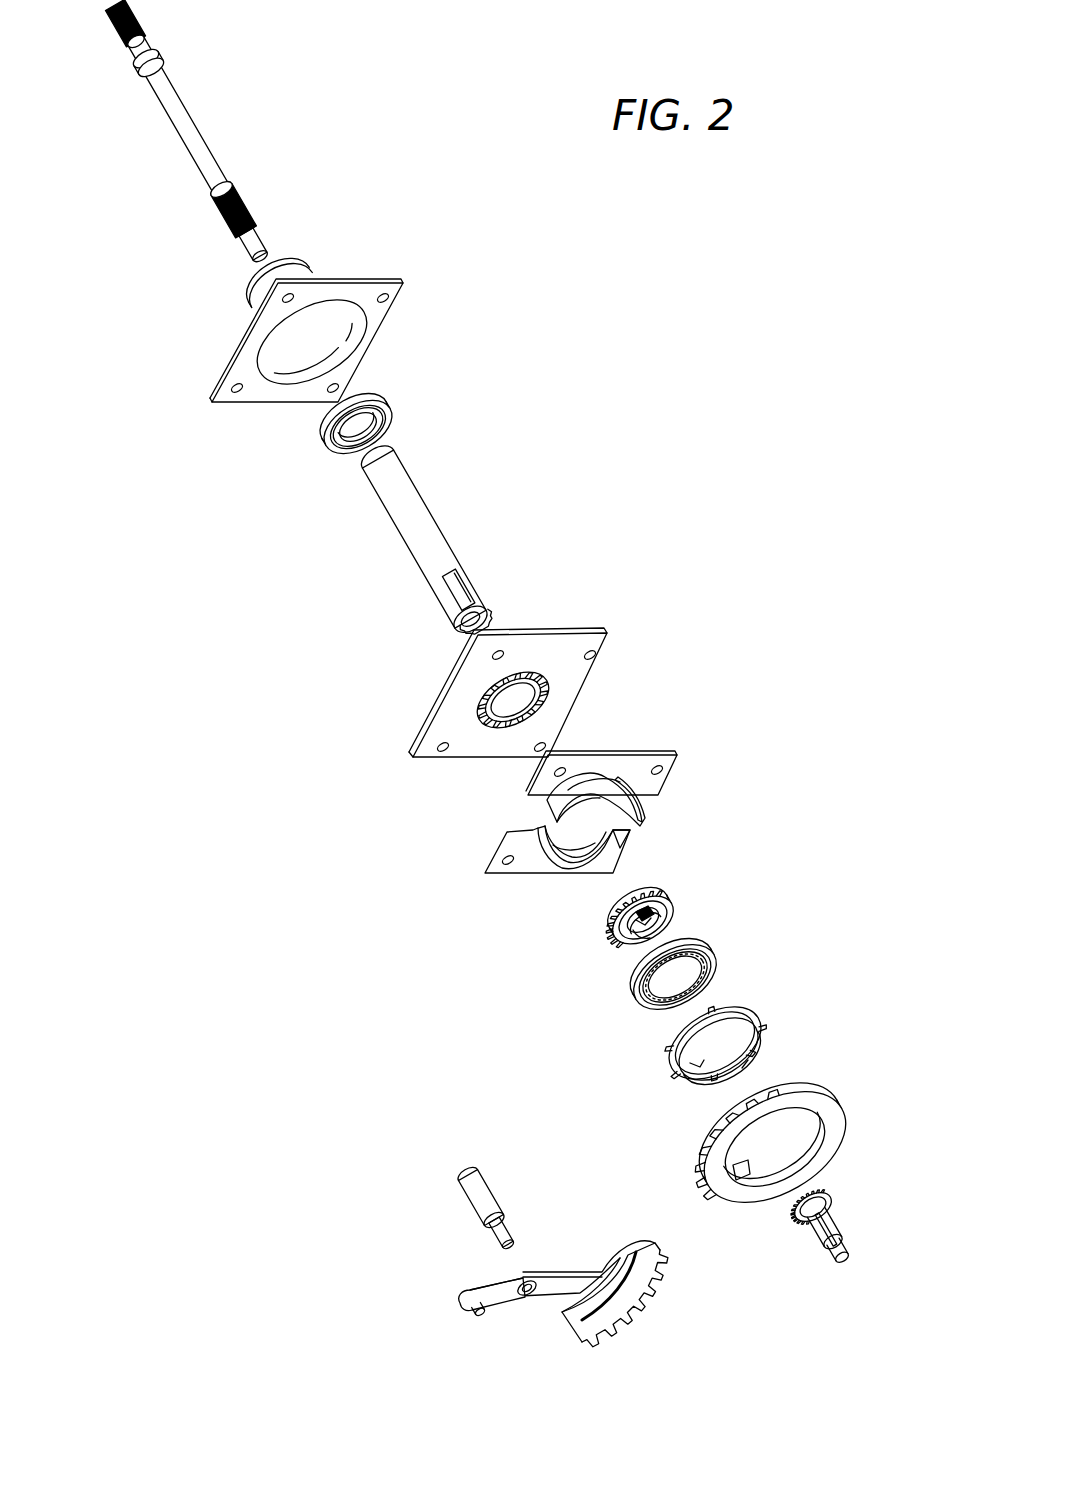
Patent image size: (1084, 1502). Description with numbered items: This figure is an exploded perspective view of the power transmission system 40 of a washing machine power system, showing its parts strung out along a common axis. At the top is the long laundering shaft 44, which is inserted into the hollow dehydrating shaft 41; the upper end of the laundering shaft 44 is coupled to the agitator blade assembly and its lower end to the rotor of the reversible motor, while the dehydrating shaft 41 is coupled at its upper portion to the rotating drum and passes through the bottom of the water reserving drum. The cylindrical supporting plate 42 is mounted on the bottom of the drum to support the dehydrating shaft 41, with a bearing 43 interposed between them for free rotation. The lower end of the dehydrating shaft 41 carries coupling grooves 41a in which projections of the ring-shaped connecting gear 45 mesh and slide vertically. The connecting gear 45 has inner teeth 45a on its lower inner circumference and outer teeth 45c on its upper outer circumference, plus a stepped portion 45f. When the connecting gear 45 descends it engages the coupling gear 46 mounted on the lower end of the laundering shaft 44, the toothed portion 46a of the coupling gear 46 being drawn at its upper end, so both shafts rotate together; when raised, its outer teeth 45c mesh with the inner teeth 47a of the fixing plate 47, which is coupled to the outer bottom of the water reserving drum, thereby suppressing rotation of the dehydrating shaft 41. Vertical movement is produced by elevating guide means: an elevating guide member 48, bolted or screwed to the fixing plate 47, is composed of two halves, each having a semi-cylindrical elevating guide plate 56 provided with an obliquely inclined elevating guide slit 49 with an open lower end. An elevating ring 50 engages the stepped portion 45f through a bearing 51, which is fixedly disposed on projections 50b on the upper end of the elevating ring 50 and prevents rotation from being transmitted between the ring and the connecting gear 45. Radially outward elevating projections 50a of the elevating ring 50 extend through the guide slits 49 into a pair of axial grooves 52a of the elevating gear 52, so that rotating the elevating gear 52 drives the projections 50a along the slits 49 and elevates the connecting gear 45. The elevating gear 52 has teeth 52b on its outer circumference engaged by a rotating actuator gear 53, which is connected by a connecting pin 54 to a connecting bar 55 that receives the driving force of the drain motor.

The power transmission system 40 is at (217, 797).
The dehydrating shaft 41 is at (415, 496).
The coupling grooves 41a is at (453, 586).
The cylindrical supporting plate 42 is at (340, 286).
The bearing 43 is at (376, 402).
The laundering shaft 44 is at (185, 118).
The connecting gear 45 is at (659, 896).
The inner teeth 45a is at (657, 926).
The outer teeth 45c is at (655, 882).
The stepped portion 45f is at (612, 937).
The coupling gear 46 is at (858, 1215).
The pinion teeth 46a is at (826, 1198).
The fixing plate 47 is at (551, 668).
The inner teeth 47a is at (548, 690).
The elevating guide member 48 is at (633, 763).
The elevating guide slit 49 is at (620, 800).
The elevating ring 50 is at (687, 1025).
The elevating projections 50a is at (736, 996).
The projections 50b is at (674, 1067).
The bearing 51 is at (638, 985).
The elevating gear 52 is at (755, 1161).
The axial grooves 52a is at (742, 1183).
The teeth 52b is at (690, 1141).
The rotating actuator gear 53 is at (610, 1262).
The connecting pin 54 is at (466, 1204).
The connecting bar 55 is at (505, 1302).
The elevating guide plate 56 is at (563, 805).